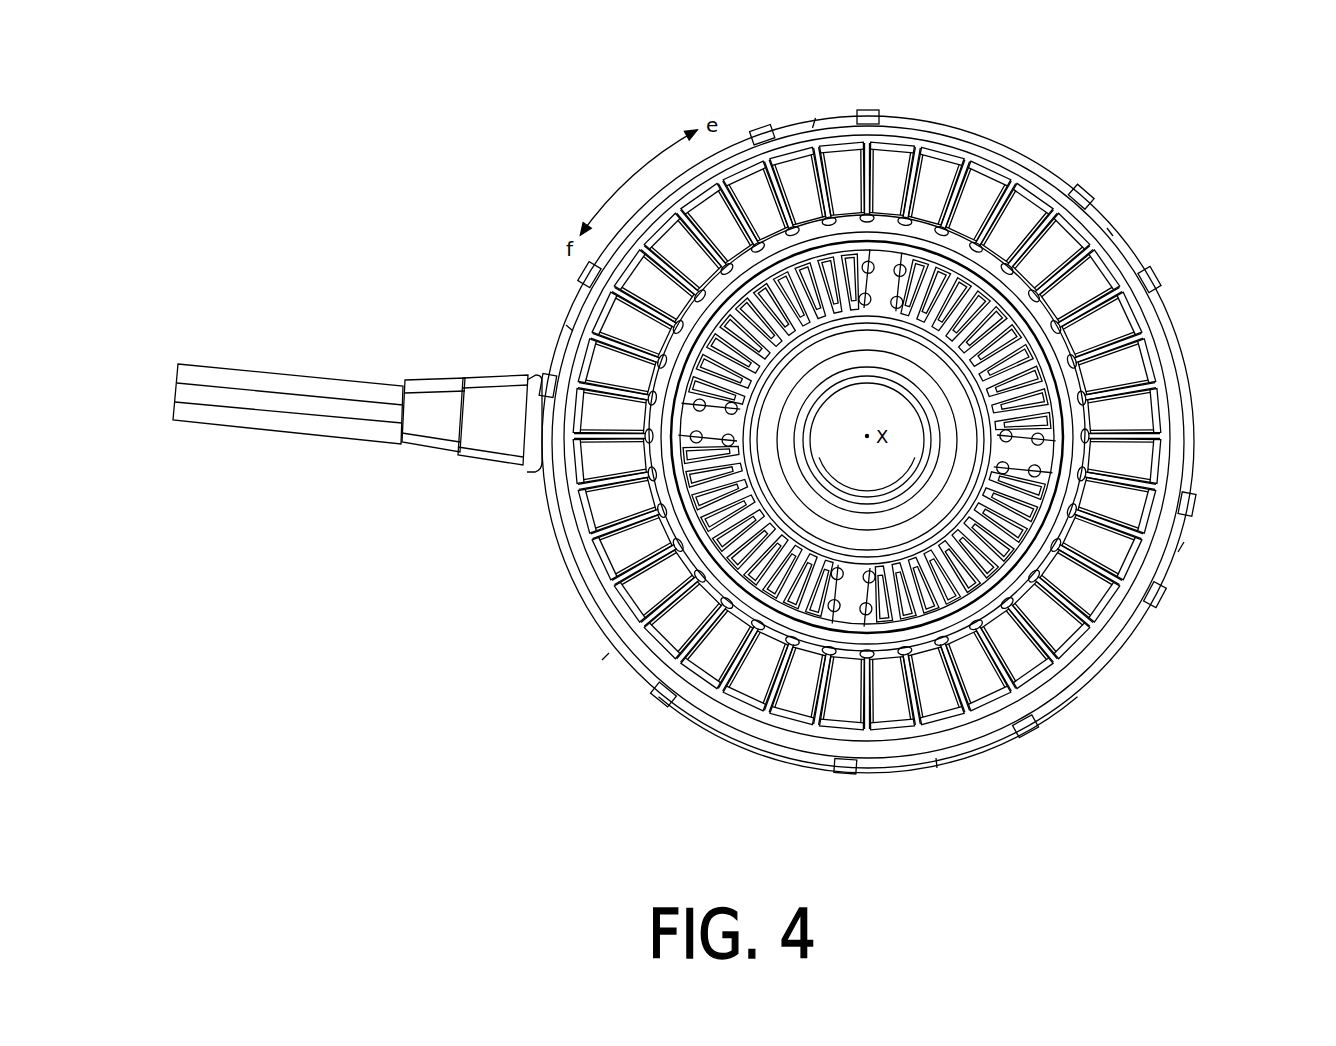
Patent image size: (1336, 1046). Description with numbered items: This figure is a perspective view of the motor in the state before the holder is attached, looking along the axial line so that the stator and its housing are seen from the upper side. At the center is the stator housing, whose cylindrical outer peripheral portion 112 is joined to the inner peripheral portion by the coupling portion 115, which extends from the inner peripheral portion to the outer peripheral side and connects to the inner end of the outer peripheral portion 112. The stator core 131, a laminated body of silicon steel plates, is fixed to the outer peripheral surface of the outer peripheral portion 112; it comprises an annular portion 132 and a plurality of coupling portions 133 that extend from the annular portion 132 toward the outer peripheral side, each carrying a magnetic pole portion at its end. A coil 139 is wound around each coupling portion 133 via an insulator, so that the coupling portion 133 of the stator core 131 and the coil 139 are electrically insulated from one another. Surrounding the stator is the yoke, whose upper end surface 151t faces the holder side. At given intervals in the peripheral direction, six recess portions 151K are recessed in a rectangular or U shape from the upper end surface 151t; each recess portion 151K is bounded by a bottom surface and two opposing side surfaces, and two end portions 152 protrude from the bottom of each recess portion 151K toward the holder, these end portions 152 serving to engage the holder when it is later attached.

The upper end surface 151t is at (953, 122).
The recess portion 151K is at (812, 104).
The end portion 152 is at (1078, 190).
The stator core 131 is at (472, 567).
The annular portion 132 is at (665, 528).
The coupling portion 133 is at (655, 580).
The coil 139 is at (1023, 663).
The outer peripheral portion 112 is at (1072, 452).
The coupling portion 115 is at (1030, 433).